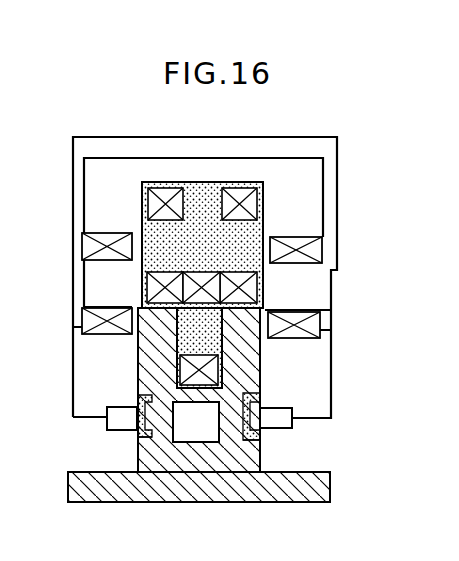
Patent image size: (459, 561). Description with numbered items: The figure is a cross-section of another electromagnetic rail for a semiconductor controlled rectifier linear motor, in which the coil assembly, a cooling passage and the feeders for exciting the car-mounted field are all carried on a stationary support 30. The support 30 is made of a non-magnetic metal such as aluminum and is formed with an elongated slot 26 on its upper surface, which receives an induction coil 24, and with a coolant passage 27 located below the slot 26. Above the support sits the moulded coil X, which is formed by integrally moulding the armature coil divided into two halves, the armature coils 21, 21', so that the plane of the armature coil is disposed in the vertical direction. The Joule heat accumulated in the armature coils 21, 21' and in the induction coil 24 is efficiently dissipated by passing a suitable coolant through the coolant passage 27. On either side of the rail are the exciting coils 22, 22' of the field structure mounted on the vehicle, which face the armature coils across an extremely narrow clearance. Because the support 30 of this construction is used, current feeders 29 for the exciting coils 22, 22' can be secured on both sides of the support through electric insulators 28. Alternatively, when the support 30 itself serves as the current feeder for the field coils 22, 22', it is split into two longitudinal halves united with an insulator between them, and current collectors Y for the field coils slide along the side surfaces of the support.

The armature coil 21 is at (105, 232).
The armature coil 21' is at (263, 204).
The coil X is at (272, 220).
The exciting coil 22 is at (200, 291).
The exciting coil 22' is at (323, 234).
The induction coil 24 is at (342, 258).
The elongated slot 26 is at (230, 350).
The coolant passage 27 is at (202, 425).
The electric insulator 28 is at (138, 402).
The current feeder 29 is at (141, 433).
The stationary support 30 is at (273, 482).
The current collector Y is at (116, 419).